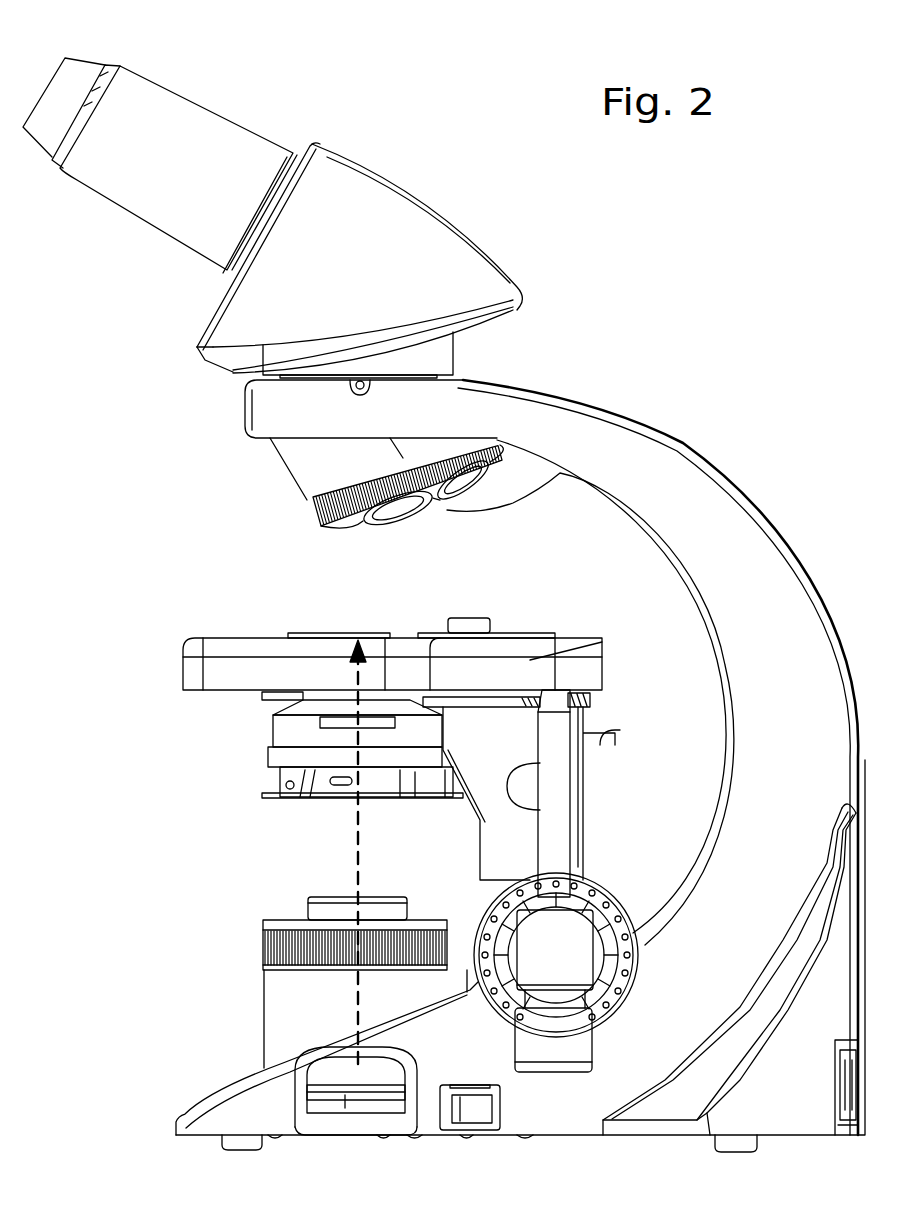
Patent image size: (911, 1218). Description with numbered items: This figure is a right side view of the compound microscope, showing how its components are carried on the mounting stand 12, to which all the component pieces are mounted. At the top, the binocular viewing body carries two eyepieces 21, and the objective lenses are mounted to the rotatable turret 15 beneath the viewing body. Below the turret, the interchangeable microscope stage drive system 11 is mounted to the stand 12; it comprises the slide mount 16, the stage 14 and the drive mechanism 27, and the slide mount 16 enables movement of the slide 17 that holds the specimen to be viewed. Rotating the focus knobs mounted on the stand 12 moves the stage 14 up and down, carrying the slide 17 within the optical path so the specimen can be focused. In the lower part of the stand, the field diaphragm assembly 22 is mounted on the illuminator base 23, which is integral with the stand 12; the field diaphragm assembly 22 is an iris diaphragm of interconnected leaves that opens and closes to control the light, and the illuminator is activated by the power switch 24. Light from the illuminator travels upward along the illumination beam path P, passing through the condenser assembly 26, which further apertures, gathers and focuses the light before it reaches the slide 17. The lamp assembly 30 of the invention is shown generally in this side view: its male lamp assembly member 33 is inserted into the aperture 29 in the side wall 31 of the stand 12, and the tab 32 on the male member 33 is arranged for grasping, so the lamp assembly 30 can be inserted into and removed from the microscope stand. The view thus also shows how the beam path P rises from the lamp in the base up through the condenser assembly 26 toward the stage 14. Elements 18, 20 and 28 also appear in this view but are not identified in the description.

The interchangeable microscope stage drive system 11 is at (178, 546).
The mounting stand 12 is at (697, 503).
The stage 14 is at (183, 676).
The rotatable turret 15 is at (450, 437).
The slide mount 16 is at (430, 635).
The slide 17 is at (345, 632).
The coarse focus knob 18 is at (572, 948).
The fine focus knob 20 is at (572, 1040).
The eyepieces 21 is at (42, 90).
The field diaphragm assembly 22 is at (263, 945).
The illuminator base 23 is at (497, 497).
The power switch 24 is at (478, 1112).
The condenser assembly 26 is at (280, 783).
The drive mechanism 27 is at (640, 758).
The base body 28 is at (287, 1017).
The aperture 29 is at (550, 825).
The lamp assembly 30 is at (363, 1128).
The side wall 31 is at (483, 1062).
The tab 32 is at (330, 1092).
The male lamp assembly member 33 is at (347, 1125).
The illumination beam path P is at (350, 808).